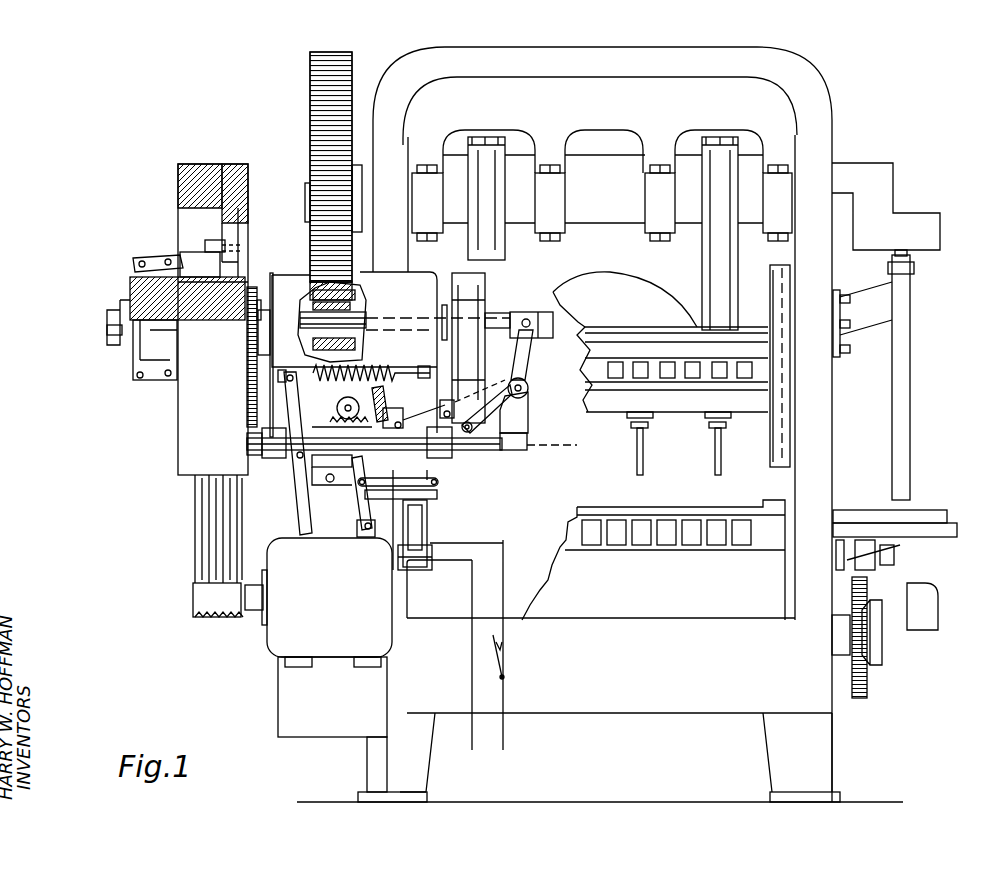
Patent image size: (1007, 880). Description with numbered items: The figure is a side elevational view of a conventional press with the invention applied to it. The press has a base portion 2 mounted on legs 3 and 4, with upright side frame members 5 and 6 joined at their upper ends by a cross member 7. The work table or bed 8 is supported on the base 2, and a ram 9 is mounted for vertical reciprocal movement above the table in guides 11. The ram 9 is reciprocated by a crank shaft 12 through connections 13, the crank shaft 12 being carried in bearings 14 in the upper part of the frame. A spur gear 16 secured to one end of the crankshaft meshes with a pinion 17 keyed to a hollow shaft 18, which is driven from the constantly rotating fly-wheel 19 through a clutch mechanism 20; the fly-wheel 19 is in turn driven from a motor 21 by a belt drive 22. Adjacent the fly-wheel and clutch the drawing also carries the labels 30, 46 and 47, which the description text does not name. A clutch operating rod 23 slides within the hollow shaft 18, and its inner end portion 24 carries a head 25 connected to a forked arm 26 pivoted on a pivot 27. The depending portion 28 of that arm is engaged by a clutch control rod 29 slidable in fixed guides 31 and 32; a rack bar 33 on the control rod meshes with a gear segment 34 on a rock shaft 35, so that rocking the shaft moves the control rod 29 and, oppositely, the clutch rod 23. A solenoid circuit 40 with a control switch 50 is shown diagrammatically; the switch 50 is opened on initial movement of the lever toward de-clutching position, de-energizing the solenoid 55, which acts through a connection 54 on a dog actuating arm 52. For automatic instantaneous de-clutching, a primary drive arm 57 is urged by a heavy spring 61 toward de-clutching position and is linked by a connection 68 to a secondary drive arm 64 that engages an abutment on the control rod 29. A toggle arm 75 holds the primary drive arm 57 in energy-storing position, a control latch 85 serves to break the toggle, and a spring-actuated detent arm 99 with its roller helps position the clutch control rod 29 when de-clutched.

The base portion 2 is at (645, 716).
The leg 3 is at (387, 770).
The leg 4 is at (815, 768).
The upright side frame member 5 is at (385, 152).
The upright side frame member 6 is at (820, 412).
The cross member 7 is at (612, 50).
The work table 8 is at (598, 566).
The ram 9 is at (685, 400).
The guides 11 is at (778, 440).
The crank shaft 12 is at (750, 162).
The connections 13 is at (712, 268).
The bearings 14 is at (860, 138).
The spur gear 16 is at (320, 72).
The pinion 17 is at (310, 285).
The hollow shaft 18 is at (362, 312).
The fly-wheel 19 is at (187, 418).
The clutch mechanism 20 is at (103, 342).
The motor 21 is at (295, 622).
The belt drive 22 is at (207, 526).
The clutch operating rod 23 is at (357, 322).
The inner end portion 24 is at (500, 322).
The head 25 is at (543, 312).
The forked arm 26 is at (528, 352).
The pivot 27 is at (525, 388).
The depending portion 28 is at (520, 416).
The clutch control rod 29 is at (495, 452).
The bracket 30 is at (258, 300).
The fixed guide 31 is at (450, 452).
The fixed guide 32 is at (265, 442).
The rack bar 33 is at (335, 422).
The gear segment 34 is at (344, 405).
The rock shaft 35 is at (350, 404).
The solenoid circuit 40 is at (483, 604).
The hub 46 is at (247, 381).
The gear 47 is at (247, 334).
The control switch 50 is at (504, 656).
The dog actuating arm 52 is at (405, 460).
The connection 54 is at (420, 506).
The solenoid 55 is at (405, 550).
The primary drive arm 57 is at (287, 395).
The spring 61 is at (310, 370).
The secondary drive arm 64 is at (362, 522).
The connection 68 is at (348, 468).
The toggle arm 75 is at (430, 497).
The control latch 85 is at (346, 470).
The detent arm 99 is at (401, 420).